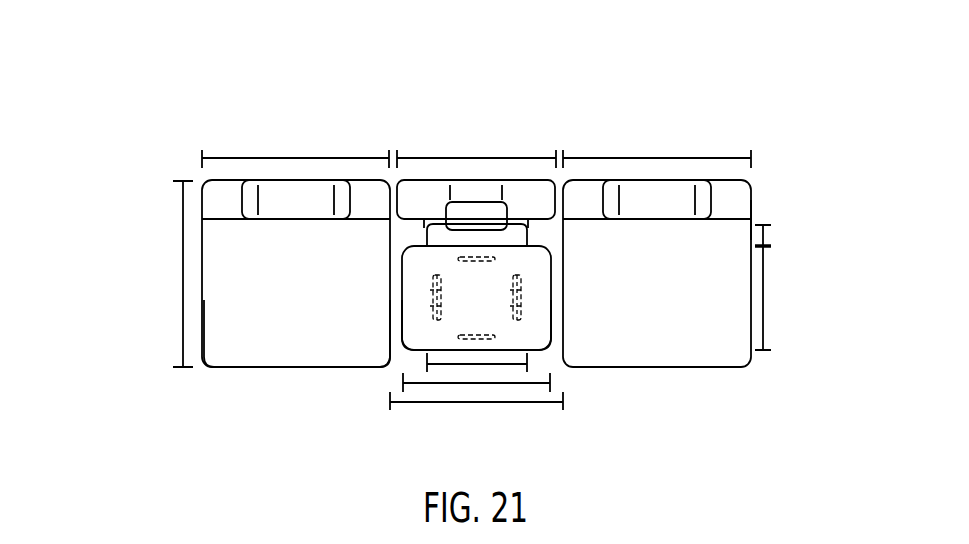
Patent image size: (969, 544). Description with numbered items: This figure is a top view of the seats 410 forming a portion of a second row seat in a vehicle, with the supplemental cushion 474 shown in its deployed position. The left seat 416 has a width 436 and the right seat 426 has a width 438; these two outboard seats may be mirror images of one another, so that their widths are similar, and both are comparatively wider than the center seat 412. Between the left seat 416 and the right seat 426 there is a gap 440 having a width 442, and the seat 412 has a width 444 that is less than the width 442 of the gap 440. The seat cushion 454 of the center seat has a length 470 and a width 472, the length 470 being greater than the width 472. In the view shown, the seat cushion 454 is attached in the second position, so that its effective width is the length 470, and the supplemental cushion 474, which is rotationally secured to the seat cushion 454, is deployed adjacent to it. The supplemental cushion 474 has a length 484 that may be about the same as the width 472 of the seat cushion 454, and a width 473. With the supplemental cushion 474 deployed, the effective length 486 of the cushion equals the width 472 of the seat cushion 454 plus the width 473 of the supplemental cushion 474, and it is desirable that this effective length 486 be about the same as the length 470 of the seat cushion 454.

The seats 410 is at (358, 90).
The width of right seat 438 is at (289, 158).
The width of seat 444 is at (474, 158).
The seat 412 is at (514, 174).
The width of left seat 436 is at (651, 158).
The supplemental cushion 474 is at (424, 224).
The effective length of cushion 486 is at (183, 272).
The left seat 416 is at (766, 217).
The width of supplemental cushion 473 is at (765, 234).
The width of seat cushion 472 is at (765, 295).
The right seat 426 is at (244, 374).
The seat cushion 454 is at (404, 353).
The length of seat cushion 470 is at (455, 383).
The length of supplemental cushion 484 is at (506, 364).
The width of gap 442 is at (480, 403).
The gap 440 is at (554, 355).